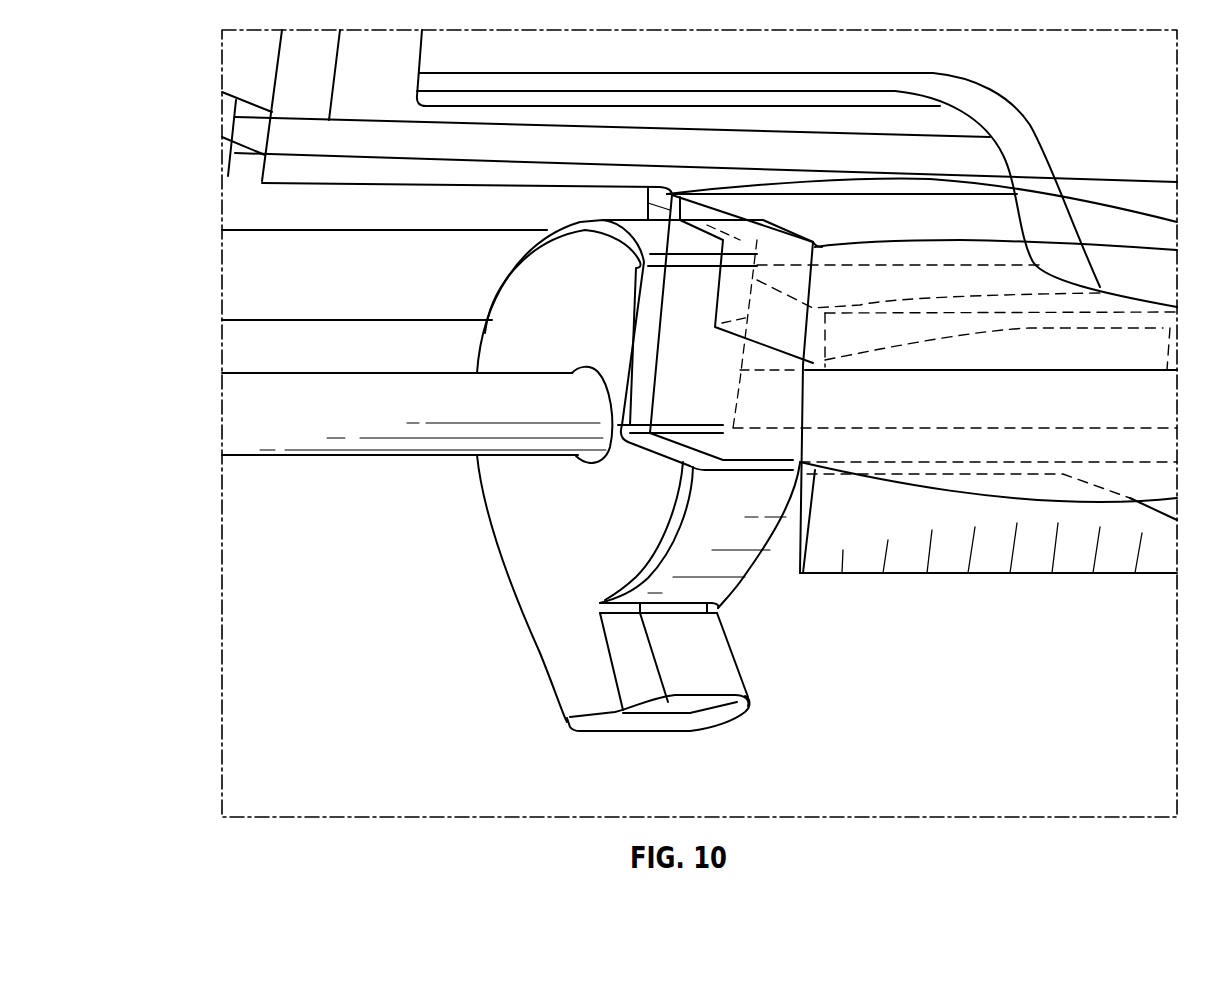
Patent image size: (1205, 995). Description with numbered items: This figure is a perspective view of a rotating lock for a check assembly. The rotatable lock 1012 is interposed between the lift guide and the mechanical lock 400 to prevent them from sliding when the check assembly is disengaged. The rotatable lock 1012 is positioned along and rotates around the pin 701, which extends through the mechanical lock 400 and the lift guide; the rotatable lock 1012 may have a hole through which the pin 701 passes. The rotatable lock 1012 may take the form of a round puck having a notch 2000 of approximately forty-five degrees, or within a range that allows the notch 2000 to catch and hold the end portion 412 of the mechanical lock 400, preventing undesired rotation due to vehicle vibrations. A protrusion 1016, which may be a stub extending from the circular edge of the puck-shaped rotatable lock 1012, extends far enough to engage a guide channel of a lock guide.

The rotatable lock 1012 is at (510, 337).
The pin 701 is at (357, 423).
The notch 2000 is at (693, 465).
The end portion 412 is at (720, 390).
The protrusion 1016 is at (688, 717).
The mechanical lock 400 is at (903, 283).